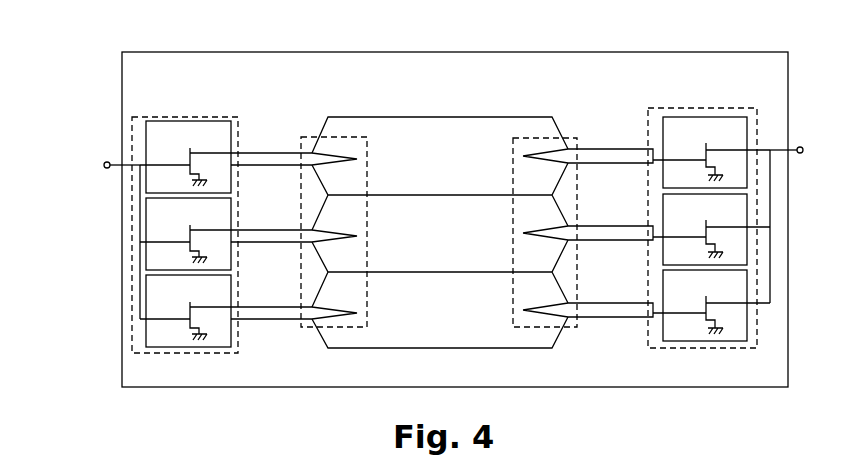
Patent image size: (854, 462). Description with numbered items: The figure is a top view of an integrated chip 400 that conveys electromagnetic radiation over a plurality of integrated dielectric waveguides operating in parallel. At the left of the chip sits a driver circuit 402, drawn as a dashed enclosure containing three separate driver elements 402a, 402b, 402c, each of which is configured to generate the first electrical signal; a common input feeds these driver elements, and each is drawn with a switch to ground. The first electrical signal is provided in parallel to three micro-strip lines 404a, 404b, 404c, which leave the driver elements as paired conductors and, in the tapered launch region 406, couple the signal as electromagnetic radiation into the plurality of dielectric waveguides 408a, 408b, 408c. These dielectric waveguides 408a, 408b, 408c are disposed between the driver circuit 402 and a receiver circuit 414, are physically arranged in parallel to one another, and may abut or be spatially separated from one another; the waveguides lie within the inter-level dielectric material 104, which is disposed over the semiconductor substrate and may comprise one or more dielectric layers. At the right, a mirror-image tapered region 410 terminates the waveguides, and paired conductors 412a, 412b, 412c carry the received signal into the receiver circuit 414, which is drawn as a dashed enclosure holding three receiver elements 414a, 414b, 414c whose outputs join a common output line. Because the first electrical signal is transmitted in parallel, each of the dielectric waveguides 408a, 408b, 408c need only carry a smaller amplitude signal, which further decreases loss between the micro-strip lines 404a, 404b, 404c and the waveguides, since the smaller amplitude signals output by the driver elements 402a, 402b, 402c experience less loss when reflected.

The integrated chip 400 is at (118, 23).
The inter-level dielectric (ILD) material 104 is at (788, 215).
The driver circuit 402 is at (184, 117).
The driver element 402a is at (185, 157).
The driver element 402b is at (185, 234).
The driver element 402c is at (185, 311).
The micro-strip line 404a is at (236, 152).
The micro-strip line 404b is at (236, 229).
The micro-strip line 404c is at (236, 306).
The input coupler section 406 is at (333, 137).
The dielectric waveguide 408a is at (440, 117).
The dielectric waveguide 408b is at (440, 195).
The dielectric waveguide 408c is at (440, 272).
The output coupler section 410 is at (537, 138).
The output transmission line pair 412a is at (580, 148).
The output transmission line pair 412b is at (580, 225).
The output transmission line pair 412c is at (580, 302).
The receiver circuit 414 is at (700, 108).
The output switch 414a is at (716, 152).
The output switch 414b is at (716, 229).
The output switch 414c is at (716, 305).